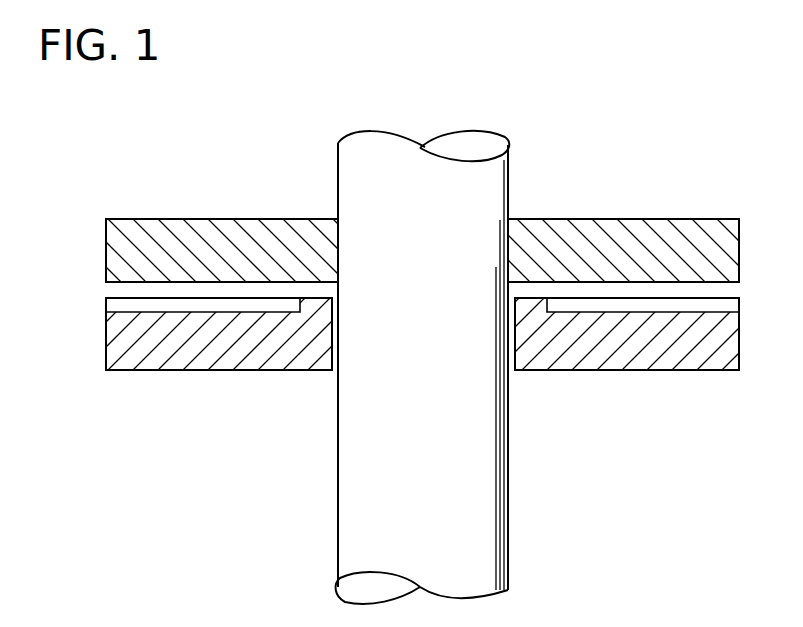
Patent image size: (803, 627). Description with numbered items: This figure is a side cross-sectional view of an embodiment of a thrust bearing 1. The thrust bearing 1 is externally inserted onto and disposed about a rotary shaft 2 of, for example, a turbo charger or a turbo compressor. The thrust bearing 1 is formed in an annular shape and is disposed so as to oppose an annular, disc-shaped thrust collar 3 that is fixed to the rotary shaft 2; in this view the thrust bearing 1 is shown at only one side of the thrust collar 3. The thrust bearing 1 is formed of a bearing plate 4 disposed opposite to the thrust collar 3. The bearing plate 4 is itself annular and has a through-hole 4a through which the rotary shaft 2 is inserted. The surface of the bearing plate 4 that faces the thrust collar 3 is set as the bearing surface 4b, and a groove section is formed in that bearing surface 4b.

The thrust bearing 1 is at (403, 309).
The rotary shaft 2 is at (458, 508).
The thrust collar 3 is at (202, 238).
The bearing plate 4 is at (413, 367).
The through-hole 4a is at (333, 345).
The bearing surface 4b is at (158, 298).